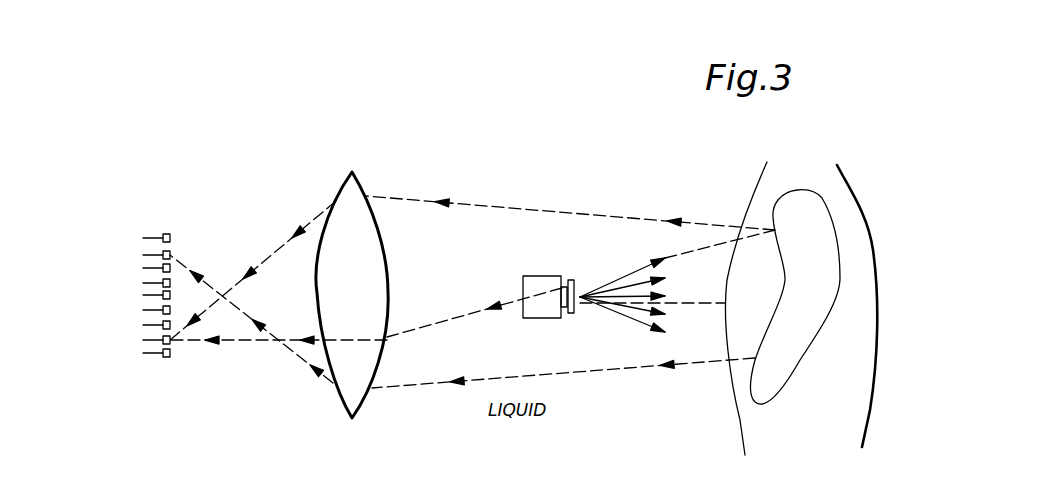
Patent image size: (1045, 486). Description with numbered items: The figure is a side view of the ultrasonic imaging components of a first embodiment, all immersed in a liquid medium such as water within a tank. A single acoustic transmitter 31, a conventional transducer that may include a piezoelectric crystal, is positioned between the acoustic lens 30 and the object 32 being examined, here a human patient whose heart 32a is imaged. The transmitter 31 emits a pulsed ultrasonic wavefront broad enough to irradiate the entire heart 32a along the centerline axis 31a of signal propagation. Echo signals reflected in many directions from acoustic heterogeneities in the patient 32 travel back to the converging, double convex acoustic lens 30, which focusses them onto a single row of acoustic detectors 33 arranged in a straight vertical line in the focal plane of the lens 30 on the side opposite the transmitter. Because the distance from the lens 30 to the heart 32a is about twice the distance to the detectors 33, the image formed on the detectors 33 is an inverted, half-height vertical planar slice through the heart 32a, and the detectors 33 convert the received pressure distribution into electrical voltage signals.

The acoustic lens 30 is at (336, 400).
The single acoustic transmitter 31 is at (522, 294).
The centerline axis of signal propagation 31a is at (692, 303).
The object 32 is at (858, 206).
The heart 32a is at (766, 378).
The single row of acoustic detectors 33 is at (163, 239).